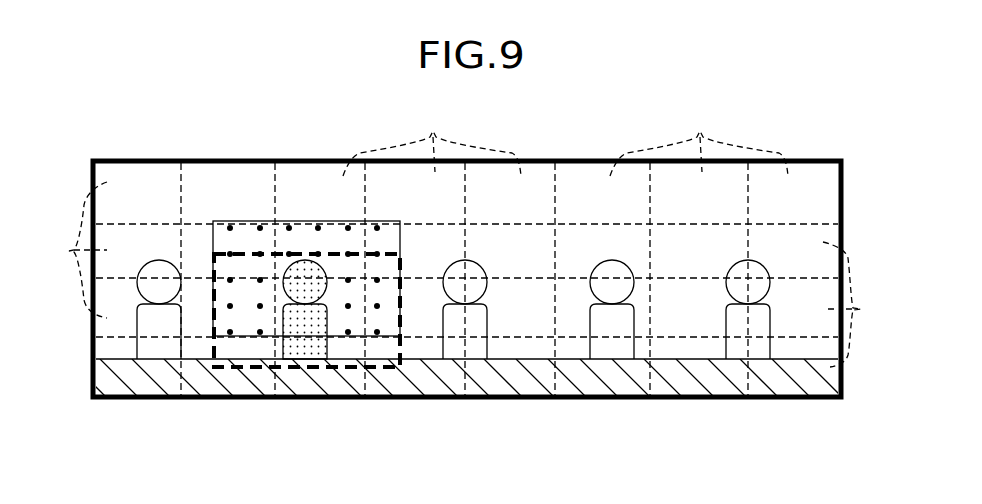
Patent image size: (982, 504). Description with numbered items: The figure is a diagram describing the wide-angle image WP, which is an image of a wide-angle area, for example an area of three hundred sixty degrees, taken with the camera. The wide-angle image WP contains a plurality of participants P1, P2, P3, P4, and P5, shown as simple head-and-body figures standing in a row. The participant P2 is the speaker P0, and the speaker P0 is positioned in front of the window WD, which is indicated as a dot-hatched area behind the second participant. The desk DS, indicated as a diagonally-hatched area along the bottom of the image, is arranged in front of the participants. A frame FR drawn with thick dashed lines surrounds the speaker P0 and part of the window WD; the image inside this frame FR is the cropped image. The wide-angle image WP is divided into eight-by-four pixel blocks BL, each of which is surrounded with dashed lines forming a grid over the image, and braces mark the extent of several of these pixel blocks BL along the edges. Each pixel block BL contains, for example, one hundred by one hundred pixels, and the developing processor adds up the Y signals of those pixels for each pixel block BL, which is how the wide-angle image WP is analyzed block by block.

The wide-angle image WP is at (826, 160).
The desk DS is at (800, 387).
The pixel block BL is at (58, 251).
The window WD is at (229, 221).
The frame FR is at (299, 253).
The participant P1 is at (158, 342).
The participant P2 is at (296, 360).
The speaker P0 is at (305, 343).
The participant P3 is at (452, 342).
The participant P4 is at (603, 343).
The participant P5 is at (737, 343).